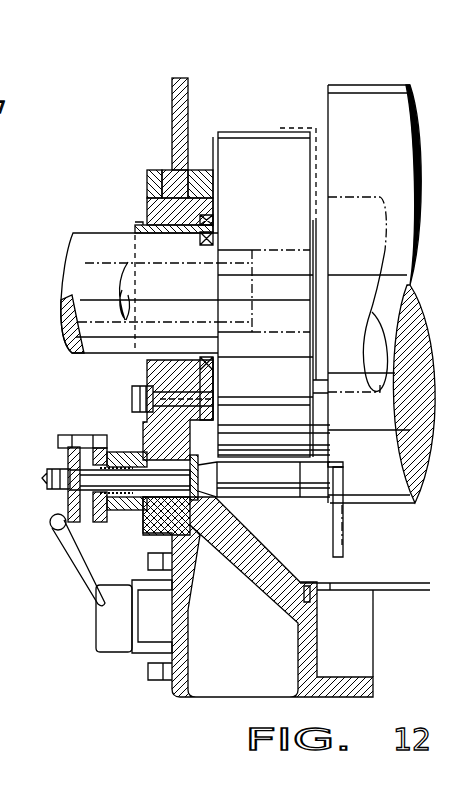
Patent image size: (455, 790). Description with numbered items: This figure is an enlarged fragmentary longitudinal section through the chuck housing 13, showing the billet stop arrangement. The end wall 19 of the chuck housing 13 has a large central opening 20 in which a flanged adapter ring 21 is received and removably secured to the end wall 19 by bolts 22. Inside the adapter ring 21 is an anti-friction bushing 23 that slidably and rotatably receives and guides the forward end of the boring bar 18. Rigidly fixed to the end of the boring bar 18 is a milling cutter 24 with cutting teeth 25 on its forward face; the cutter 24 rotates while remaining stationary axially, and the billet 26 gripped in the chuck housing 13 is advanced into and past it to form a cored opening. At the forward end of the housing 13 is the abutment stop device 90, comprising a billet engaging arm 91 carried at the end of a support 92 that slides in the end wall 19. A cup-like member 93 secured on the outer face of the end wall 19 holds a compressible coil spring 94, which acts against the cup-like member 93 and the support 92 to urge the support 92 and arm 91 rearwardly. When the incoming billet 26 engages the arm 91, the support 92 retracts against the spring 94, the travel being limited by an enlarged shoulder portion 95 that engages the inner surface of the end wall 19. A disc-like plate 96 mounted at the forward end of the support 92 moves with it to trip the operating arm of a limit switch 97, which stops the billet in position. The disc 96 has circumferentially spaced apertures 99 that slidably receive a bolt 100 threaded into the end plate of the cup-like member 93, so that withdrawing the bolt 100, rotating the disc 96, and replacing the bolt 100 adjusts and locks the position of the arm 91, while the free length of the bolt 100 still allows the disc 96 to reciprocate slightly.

The chuck housing 13 is at (245, 648).
The boring bar 18 is at (97, 242).
The end wall 19 is at (172, 136).
The central opening 20 is at (200, 198).
The flanged adapter ring 21 is at (147, 202).
The bolts 22 is at (132, 400).
The anti-friction bushing 23 is at (143, 228).
The milling cutter 24 is at (250, 155).
The cutting teeth 25 is at (280, 130).
The billet 26 is at (357, 107).
The abutment stop device 90 is at (263, 483).
The billet engaging arm 91 is at (323, 545).
The support 92 is at (307, 482).
The cup-like member 93 is at (127, 453).
The coil spring 94 is at (107, 513).
The enlarged shoulder portion 95 is at (190, 500).
The disc-like plate 96 is at (68, 461).
The limit switch 97 is at (108, 622).
The apertures 99 is at (66, 507).
The bolt 100 is at (88, 440).